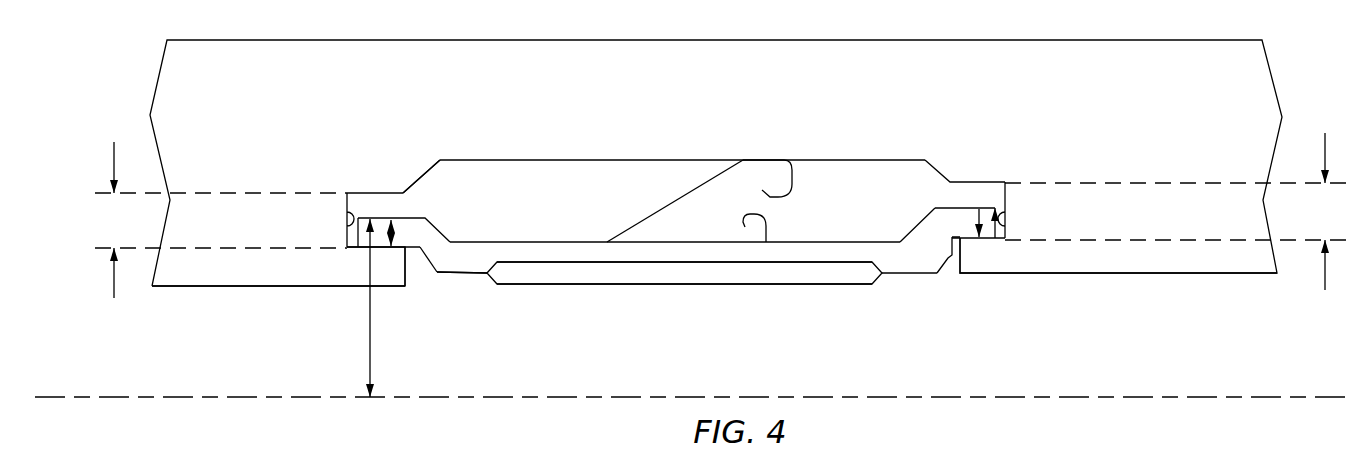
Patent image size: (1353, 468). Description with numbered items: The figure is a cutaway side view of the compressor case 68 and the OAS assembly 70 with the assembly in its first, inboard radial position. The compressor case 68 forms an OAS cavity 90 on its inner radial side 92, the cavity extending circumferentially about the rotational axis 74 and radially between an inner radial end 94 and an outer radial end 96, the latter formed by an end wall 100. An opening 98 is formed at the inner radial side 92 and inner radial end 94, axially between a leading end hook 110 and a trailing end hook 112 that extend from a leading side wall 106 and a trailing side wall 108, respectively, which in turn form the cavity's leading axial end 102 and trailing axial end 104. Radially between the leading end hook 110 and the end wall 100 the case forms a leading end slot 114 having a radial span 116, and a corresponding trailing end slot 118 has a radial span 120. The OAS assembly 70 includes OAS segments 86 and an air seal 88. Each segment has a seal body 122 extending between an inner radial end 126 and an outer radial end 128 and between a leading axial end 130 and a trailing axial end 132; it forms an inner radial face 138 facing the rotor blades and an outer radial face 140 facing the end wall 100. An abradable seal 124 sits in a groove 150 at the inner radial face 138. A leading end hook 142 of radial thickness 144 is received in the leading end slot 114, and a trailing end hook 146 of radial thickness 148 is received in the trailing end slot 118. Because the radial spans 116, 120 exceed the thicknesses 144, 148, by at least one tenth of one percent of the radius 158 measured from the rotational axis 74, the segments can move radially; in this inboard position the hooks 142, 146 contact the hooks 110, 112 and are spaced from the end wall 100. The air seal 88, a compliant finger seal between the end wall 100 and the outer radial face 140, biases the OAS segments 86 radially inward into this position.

The compressor case 68 is at (1115, 65).
The OAS assembly 70 is at (948, 284).
The rotational axis 74 is at (1185, 400).
The OAS segments 86 is at (470, 292).
The air seal 88 is at (668, 203).
The OAS cavity 90 is at (824, 233).
The inner radial side 92 is at (333, 288).
The inner radial end 94 is at (438, 285).
The outer radial end 96 is at (530, 170).
The opening 98 is at (911, 279).
The end wall 100 is at (790, 178).
The leading axial end 102 is at (360, 195).
The trailing axial end 104 is at (1002, 197).
The leading side wall 106 is at (347, 214).
The trailing side wall 108 is at (1003, 217).
The leading end hook 110 is at (381, 268).
The trailing end hook 112 is at (978, 257).
The leading end slot 114 is at (400, 203).
The radial span 116 is at (221, 220).
The trailing end slot 118 is at (977, 198).
The radial span 120 is at (1177, 211).
The seal body 122 is at (556, 253).
The abradable seal 124 is at (723, 275).
The inner radial end 126 is at (893, 279).
The outer radial end 128 is at (385, 200).
The leading axial end 130 is at (346, 247).
The trailing axial end 132 is at (1003, 233).
The inner radial face 138 is at (487, 278).
The outer radial face 140 is at (572, 242).
The leading end hook 142 is at (408, 232).
The radial thickness 144 is at (380, 208).
The trailing end hook 146 is at (963, 223).
The radial thickness 148 is at (1000, 208).
The groove 150 is at (692, 268).
The radius 158 is at (370, 333).